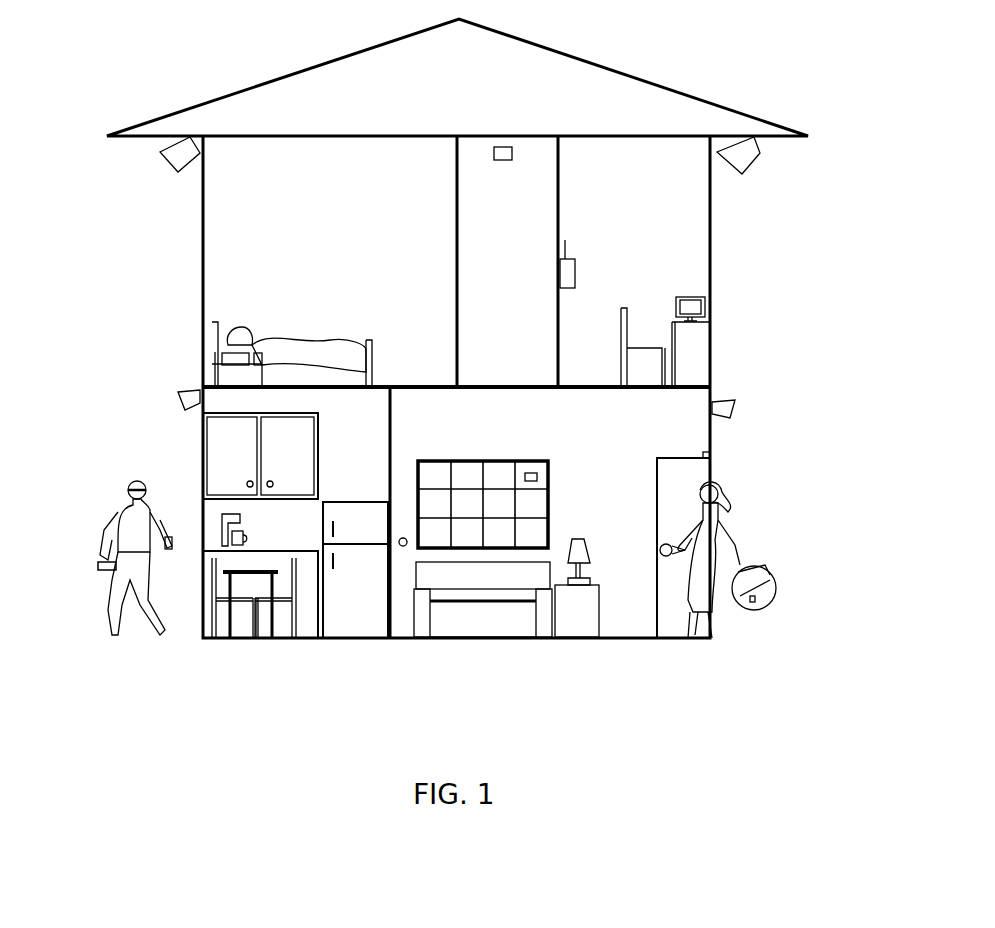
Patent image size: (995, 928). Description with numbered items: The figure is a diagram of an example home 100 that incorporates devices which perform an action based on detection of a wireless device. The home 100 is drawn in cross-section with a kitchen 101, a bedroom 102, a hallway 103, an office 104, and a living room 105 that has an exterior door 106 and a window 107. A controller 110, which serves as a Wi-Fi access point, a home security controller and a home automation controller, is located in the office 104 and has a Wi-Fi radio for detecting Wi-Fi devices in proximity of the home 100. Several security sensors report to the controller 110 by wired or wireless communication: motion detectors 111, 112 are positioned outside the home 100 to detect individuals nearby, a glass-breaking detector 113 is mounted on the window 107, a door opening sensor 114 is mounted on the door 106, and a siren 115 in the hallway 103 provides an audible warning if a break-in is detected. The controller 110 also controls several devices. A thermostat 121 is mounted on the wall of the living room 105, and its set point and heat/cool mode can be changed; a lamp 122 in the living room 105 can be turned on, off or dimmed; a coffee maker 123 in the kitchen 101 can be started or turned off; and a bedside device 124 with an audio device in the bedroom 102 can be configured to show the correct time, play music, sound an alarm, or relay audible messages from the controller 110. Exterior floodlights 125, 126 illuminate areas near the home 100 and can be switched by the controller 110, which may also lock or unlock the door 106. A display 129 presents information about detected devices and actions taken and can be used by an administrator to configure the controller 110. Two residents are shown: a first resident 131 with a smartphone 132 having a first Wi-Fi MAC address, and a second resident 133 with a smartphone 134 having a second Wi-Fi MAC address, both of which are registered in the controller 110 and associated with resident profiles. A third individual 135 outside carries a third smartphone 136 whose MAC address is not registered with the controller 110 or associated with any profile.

The home 100 is at (207, 93).
The kitchen 101 is at (378, 432).
The bedroom 102 is at (360, 205).
The hallway 103 is at (532, 205).
The office 104 is at (680, 205).
The living room 105 is at (585, 432).
The exterior door 106 is at (714, 463).
The window 107 is at (440, 452).
The controller 110 is at (577, 262).
The motion detector 111 is at (735, 405).
The motion detector 112 is at (178, 398).
The glass-breaking detector 113 is at (548, 456).
The door opening sensor 114 is at (703, 453).
The siren 115 is at (501, 147).
The thermostat 121 is at (403, 547).
The lamp 122 is at (582, 538).
The coffee maker 123 is at (246, 521).
The bedside device 124 is at (222, 357).
The exterior floodlight 125 is at (178, 160).
The exterior floodlight 126 is at (745, 160).
The display 129 is at (692, 305).
The first resident 131 is at (717, 530).
The smartphone 132 is at (773, 595).
The second resident 133 is at (250, 327).
The smartphone 134 is at (262, 353).
The third individual 135 is at (135, 535).
The third smartphone 136 is at (167, 537).